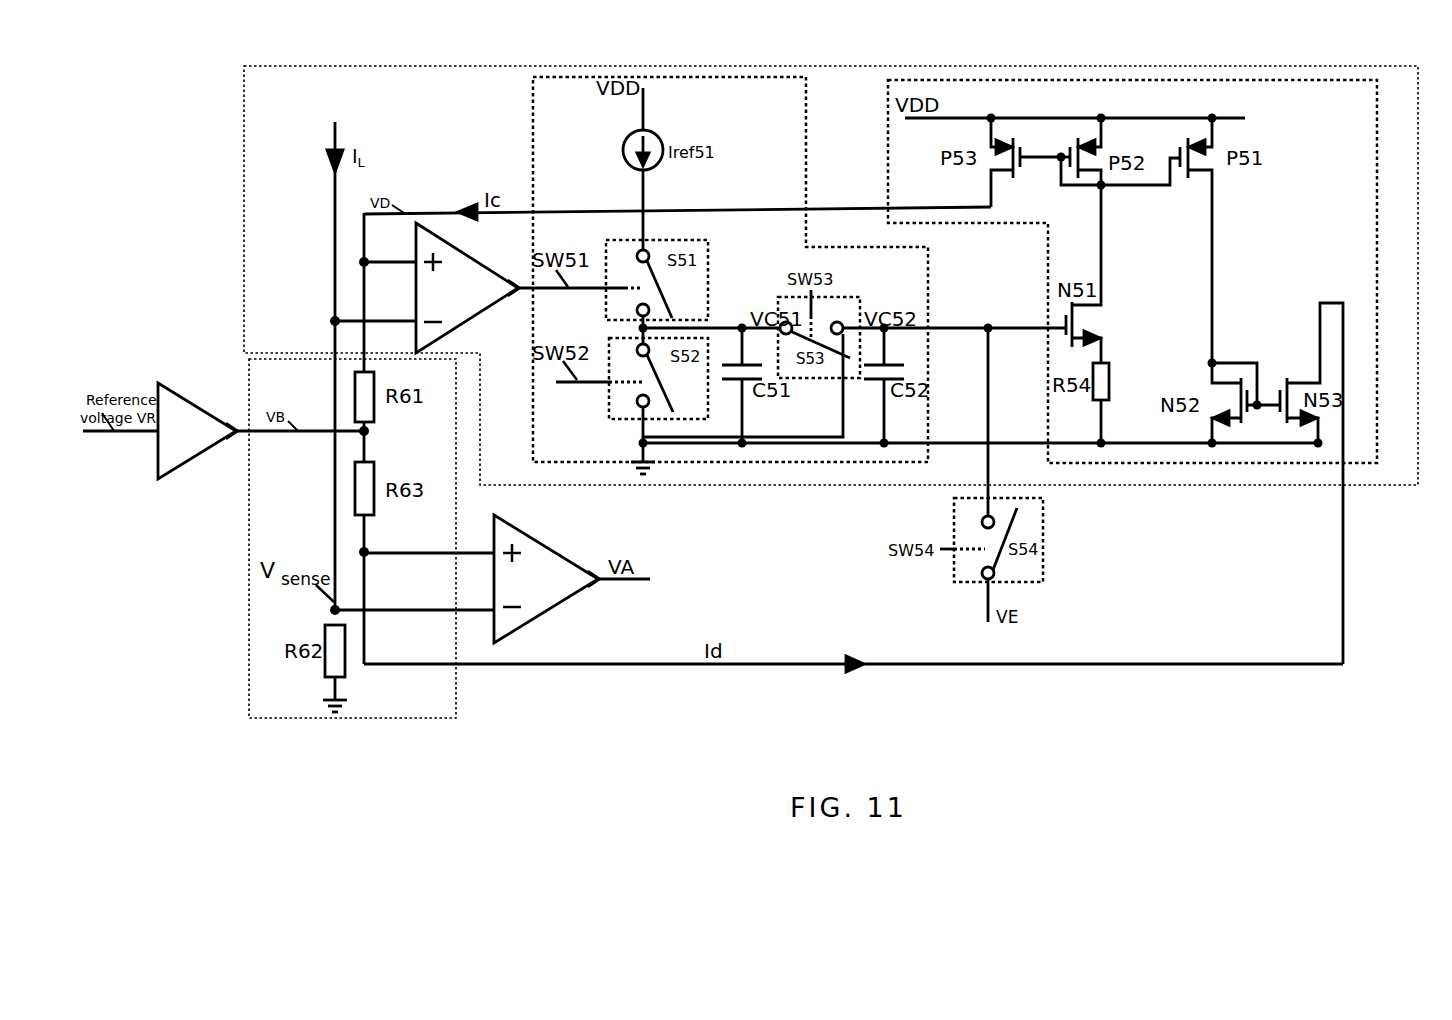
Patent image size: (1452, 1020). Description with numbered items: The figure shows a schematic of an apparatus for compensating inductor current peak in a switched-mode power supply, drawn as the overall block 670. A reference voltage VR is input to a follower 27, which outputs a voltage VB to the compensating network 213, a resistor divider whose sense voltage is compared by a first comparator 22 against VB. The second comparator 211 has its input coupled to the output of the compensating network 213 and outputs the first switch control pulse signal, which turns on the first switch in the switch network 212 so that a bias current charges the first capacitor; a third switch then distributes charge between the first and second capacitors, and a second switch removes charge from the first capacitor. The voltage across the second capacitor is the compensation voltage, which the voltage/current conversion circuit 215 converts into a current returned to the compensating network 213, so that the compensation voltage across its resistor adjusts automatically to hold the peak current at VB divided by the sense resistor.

The constant current control circuit 670 is at (831, 275).
The second comparator 211 is at (440, 238).
The switch network 212 is at (730, 269).
The compensating network 213 is at (352, 538).
The voltage/current conversion circuit 215 is at (1132, 271).
The follower 27 is at (188, 400).
The comparator 1 22 is at (560, 553).